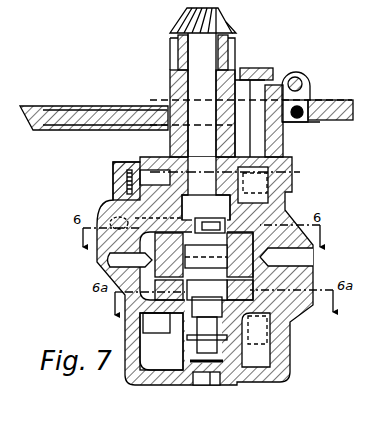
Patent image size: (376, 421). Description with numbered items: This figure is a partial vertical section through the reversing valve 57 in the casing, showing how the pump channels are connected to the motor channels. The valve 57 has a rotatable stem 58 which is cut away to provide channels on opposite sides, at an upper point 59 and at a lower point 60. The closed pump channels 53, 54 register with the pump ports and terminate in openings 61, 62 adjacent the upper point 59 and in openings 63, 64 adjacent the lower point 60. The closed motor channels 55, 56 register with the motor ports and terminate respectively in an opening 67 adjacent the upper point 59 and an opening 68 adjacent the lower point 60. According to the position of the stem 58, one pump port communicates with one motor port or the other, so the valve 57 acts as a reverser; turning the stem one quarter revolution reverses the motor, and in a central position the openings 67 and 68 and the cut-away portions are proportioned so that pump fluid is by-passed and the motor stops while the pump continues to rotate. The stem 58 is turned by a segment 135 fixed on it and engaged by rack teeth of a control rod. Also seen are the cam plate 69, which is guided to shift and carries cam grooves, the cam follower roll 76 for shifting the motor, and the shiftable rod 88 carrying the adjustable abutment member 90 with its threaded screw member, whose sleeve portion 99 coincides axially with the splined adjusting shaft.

The segment 135 is at (235, 35).
The cam follower roll 76 is at (273, 68).
The shiftable rod 88 is at (308, 98).
The member 90 is at (311, 99).
The sleeve portion 99 is at (304, 121).
The cam plate 69 is at (285, 144).
The rotatable stem 58 is at (193, 157).
The closed channel 55 is at (128, 220).
The upper point 59 is at (237, 227).
The opening 67 is at (203, 225).
The opening 61 is at (169, 255).
The opening 62 is at (240, 255).
The opening 63 is at (169, 286).
The opening 64 is at (240, 286).
The closed channel 53 is at (112, 261).
The closed channel 54 is at (292, 255).
The closed channel 56 is at (293, 315).
The lower point 60 is at (185, 295).
The opening 68 is at (161, 341).
The reversing valve 57 is at (205, 310).